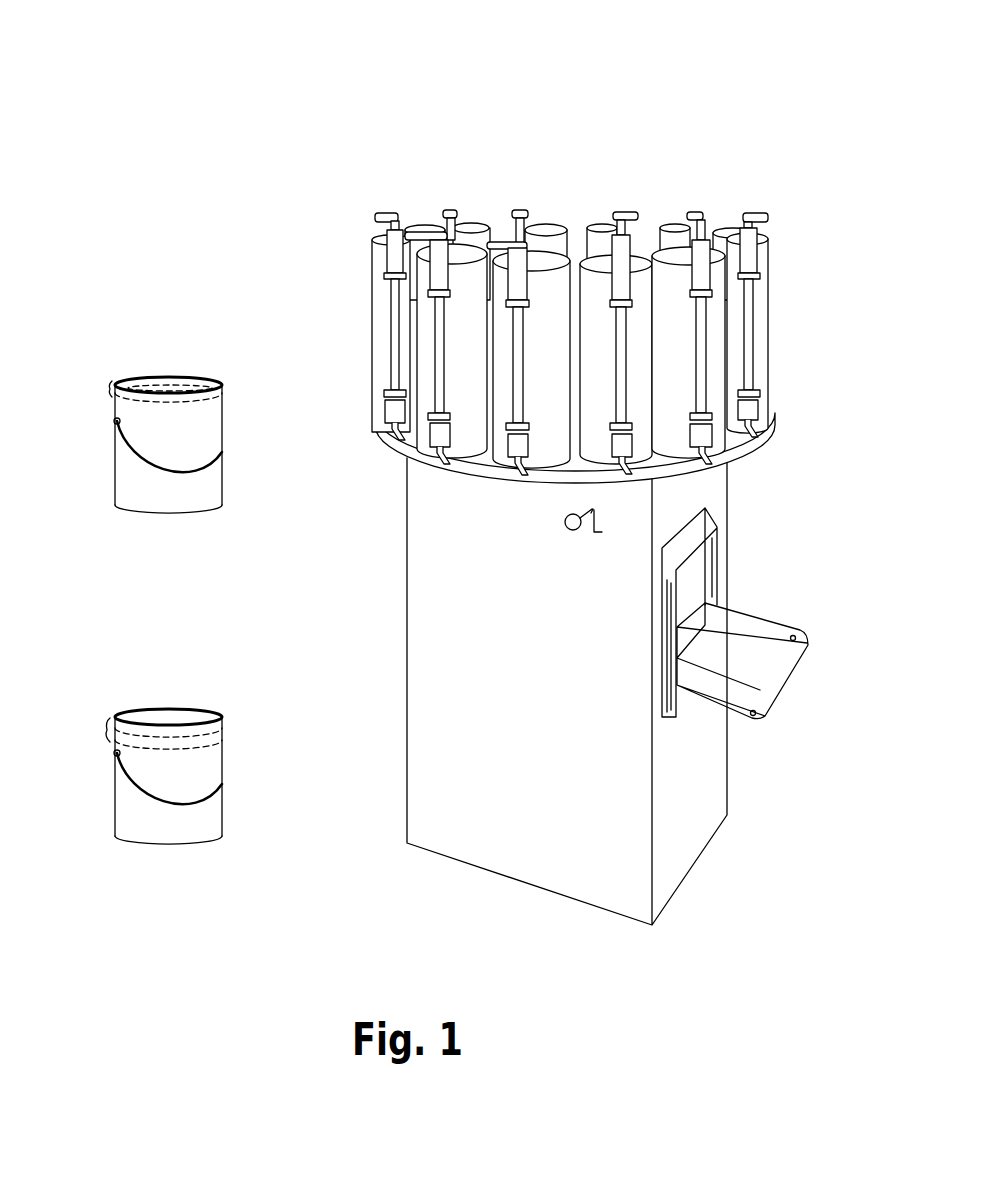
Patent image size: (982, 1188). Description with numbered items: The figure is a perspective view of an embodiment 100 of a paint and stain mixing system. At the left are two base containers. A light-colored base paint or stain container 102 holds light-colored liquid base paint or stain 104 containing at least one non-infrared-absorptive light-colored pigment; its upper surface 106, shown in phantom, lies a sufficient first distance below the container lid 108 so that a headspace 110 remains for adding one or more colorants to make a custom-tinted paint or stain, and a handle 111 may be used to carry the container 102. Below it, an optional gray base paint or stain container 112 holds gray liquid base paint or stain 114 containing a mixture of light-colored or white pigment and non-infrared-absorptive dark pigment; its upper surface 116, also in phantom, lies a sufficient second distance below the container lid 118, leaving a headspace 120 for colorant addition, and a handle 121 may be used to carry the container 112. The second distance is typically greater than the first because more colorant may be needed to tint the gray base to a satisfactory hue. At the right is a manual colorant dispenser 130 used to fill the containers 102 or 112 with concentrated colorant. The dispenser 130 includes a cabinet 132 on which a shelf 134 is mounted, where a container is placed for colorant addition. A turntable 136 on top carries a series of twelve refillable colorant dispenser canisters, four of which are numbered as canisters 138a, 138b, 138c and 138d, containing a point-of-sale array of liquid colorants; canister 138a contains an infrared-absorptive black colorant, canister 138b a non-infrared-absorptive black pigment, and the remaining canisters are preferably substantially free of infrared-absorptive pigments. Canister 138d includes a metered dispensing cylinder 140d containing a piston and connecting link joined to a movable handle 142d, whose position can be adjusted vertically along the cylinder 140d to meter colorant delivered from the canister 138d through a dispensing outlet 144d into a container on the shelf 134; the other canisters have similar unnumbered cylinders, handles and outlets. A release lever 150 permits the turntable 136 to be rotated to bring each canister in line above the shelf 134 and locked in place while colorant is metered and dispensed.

The paint and stain mixing system 100 is at (612, 75).
The light-colored base paint or stain container 102 is at (113, 465).
The light-colored liquid base paint or stain 104 is at (195, 458).
The upper surface 106 is at (190, 398).
The container lid 108 is at (173, 380).
The headspace 110 is at (222, 388).
The handle 111 is at (150, 473).
The gray base paint or stain container 112 is at (113, 796).
The gray liquid base paint or stain 114 is at (195, 789).
The upper surface 116 is at (200, 738).
The container lid 118 is at (173, 716).
The headspace 120 is at (222, 722).
The handle 121 is at (150, 805).
The manual colorant dispenser 130 is at (393, 783).
The cabinet 132 is at (427, 656).
The shelf 134 is at (765, 655).
The turntable 136 is at (392, 450).
The colorant dispenser canister 138a is at (580, 223).
The colorant dispenser canister 138b is at (653, 223).
The colorant dispenser canister 138c is at (768, 240).
The colorant dispenser canister 138d is at (768, 410).
The metered dispensing cylinder 140d is at (757, 325).
The movable handle 142d is at (770, 258).
The dispensing outlet 144d is at (758, 433).
The release lever 150 is at (572, 530).